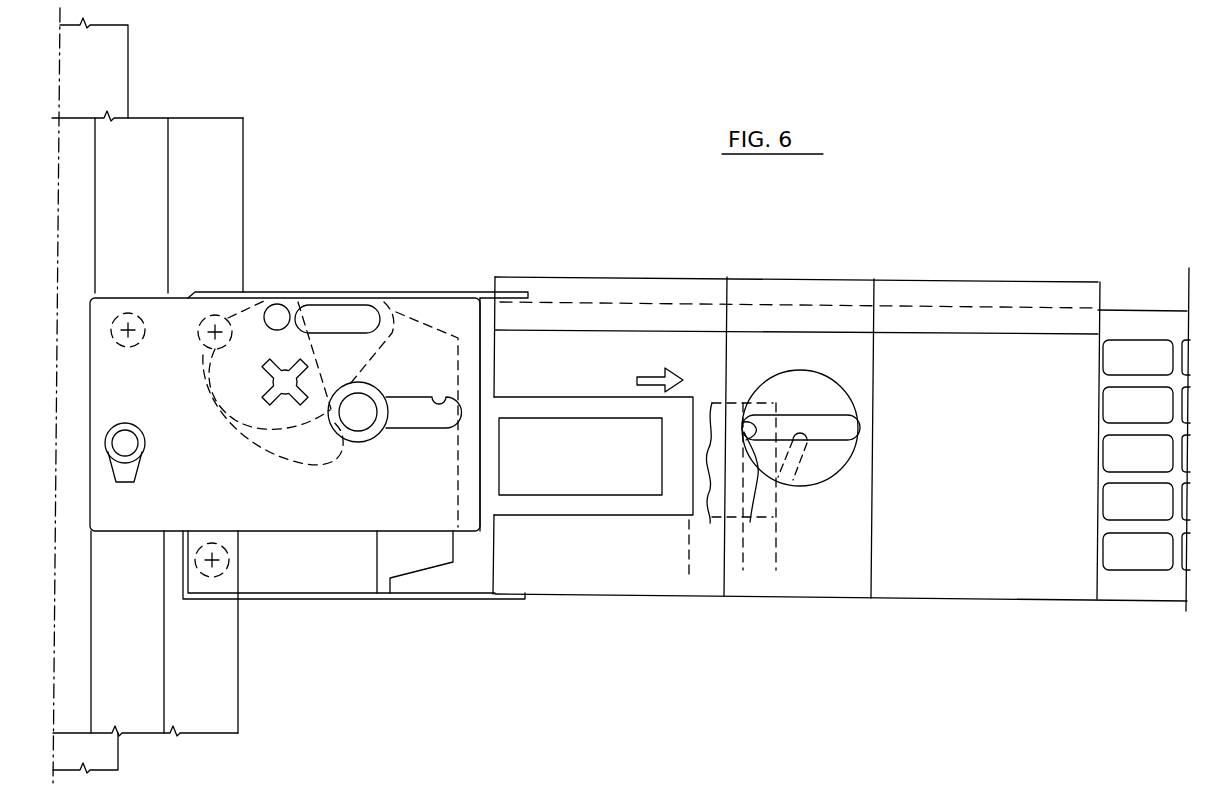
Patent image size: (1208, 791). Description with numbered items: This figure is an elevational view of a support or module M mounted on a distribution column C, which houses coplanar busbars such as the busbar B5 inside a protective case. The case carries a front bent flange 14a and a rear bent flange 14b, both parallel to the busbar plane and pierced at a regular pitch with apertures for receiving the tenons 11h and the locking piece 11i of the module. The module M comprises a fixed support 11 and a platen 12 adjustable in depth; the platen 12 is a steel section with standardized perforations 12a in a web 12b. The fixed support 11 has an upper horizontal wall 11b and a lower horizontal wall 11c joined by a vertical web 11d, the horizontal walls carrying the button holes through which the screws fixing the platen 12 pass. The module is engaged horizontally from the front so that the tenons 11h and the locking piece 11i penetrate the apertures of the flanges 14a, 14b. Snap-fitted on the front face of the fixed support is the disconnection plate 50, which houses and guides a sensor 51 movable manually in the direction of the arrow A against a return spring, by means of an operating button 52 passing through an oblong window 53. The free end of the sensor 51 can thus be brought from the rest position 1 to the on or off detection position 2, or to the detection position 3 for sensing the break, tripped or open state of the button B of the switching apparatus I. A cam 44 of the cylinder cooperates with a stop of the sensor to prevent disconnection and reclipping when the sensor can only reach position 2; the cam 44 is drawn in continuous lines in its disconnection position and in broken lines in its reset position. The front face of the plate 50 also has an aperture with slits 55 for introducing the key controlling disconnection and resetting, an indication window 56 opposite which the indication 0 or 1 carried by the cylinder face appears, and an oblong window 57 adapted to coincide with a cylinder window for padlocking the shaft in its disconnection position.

The busbar B5 is at (104, 82).
The distribution column C is at (165, 92).
The front bent flange 14a is at (152, 207).
The rear bent flange 14b is at (230, 207).
The disconnection plate 50 is at (279, 512).
The fixed support 11 is at (413, 289).
The upper horizontal wall 11b is at (318, 292).
The lower horizontal wall 11c is at (315, 600).
The vertical web 11d is at (183, 578).
The tenon 11h is at (129, 347).
The locking piece 11i is at (136, 470).
The indication window 56 is at (279, 305).
The oblong window 57 is at (333, 333).
The cam 44 is at (385, 337).
The aperture with slits 55 is at (262, 375).
The operating button 52 is at (360, 430).
The oblong window 53 is at (418, 428).
The sensor 51 is at (610, 505).
The support or module M is at (808, 249).
The direction of sensor movement A is at (660, 376).
The button of the switching apparatus B is at (801, 438).
The indication zero 0 is at (800, 362).
The rest position 1 is at (774, 532).
The on or off detection position 2 is at (745, 587).
The detection position 3 is at (778, 587).
The switching apparatus I is at (980, 450).
The platen 12 is at (1116, 433).
The standardized perforations 12a is at (1156, 372).
The web 12b is at (1115, 476).